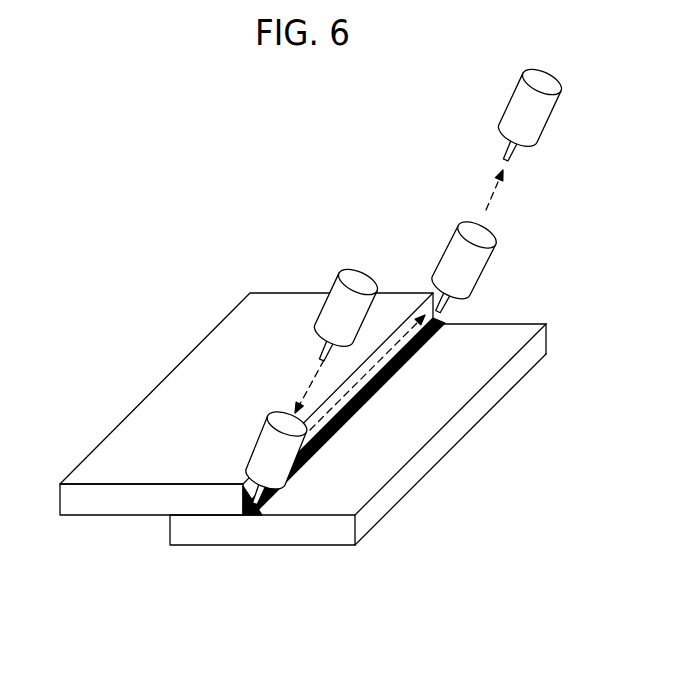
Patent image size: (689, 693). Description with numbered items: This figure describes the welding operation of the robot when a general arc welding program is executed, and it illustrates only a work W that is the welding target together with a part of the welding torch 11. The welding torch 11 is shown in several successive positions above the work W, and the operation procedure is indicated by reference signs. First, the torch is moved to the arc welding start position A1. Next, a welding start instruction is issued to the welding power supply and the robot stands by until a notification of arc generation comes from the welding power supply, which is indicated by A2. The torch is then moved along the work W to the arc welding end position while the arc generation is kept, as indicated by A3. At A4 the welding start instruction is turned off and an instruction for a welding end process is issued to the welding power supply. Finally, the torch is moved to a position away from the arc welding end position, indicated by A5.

The work W is at (112, 432).
The welding torch 11 is at (344, 268).
The arc welding start position A1 is at (307, 392).
The welding start instruction and standby for arc generation A2 is at (266, 510).
The move to arc welding end position A3 is at (405, 330).
The welding end process A4 is at (452, 314).
The move away from arc welding end position A5 is at (488, 208).